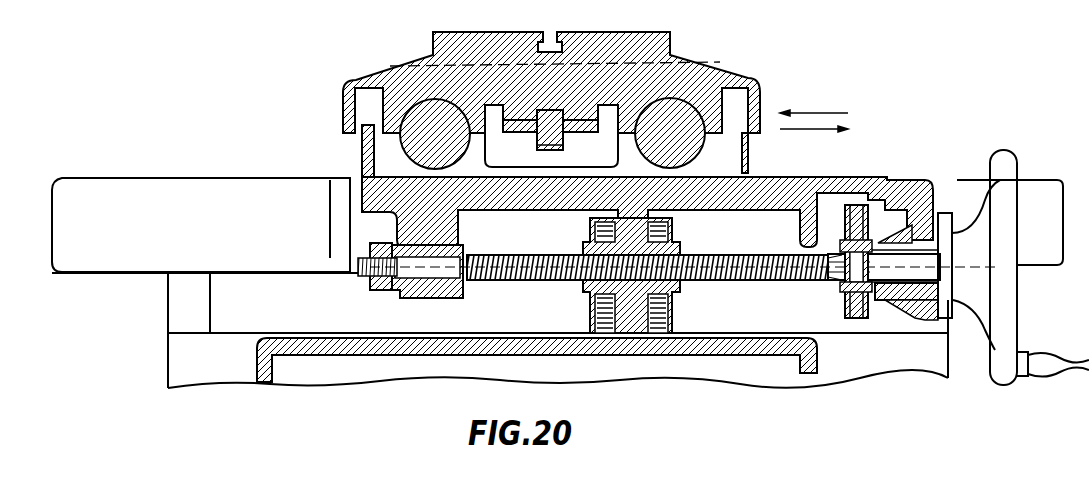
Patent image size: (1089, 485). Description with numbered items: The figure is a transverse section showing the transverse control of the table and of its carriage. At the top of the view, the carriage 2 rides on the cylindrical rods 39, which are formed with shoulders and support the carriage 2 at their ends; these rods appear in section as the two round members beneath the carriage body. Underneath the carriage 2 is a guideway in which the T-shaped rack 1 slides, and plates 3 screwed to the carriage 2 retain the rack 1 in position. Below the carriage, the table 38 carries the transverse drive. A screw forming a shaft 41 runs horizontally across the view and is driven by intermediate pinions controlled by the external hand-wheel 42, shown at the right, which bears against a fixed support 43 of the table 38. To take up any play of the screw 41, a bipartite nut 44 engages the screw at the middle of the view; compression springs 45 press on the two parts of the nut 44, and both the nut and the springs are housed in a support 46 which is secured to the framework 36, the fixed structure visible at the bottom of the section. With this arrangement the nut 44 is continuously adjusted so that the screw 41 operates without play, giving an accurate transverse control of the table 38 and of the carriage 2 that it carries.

The rack 1 is at (560, 135).
The carriage 2 is at (633, 45).
The plates 3 is at (520, 127).
The framework 36 is at (327, 352).
The table 38 is at (893, 167).
The cylindrical rods 39 is at (405, 150).
The screw forming a shaft 41 is at (513, 238).
The external hand-wheel 42 is at (1008, 305).
The fixed support 43 is at (937, 325).
The bipartite nut 44 is at (583, 246).
The compression springs 45 is at (669, 236).
The support 46 is at (629, 312).